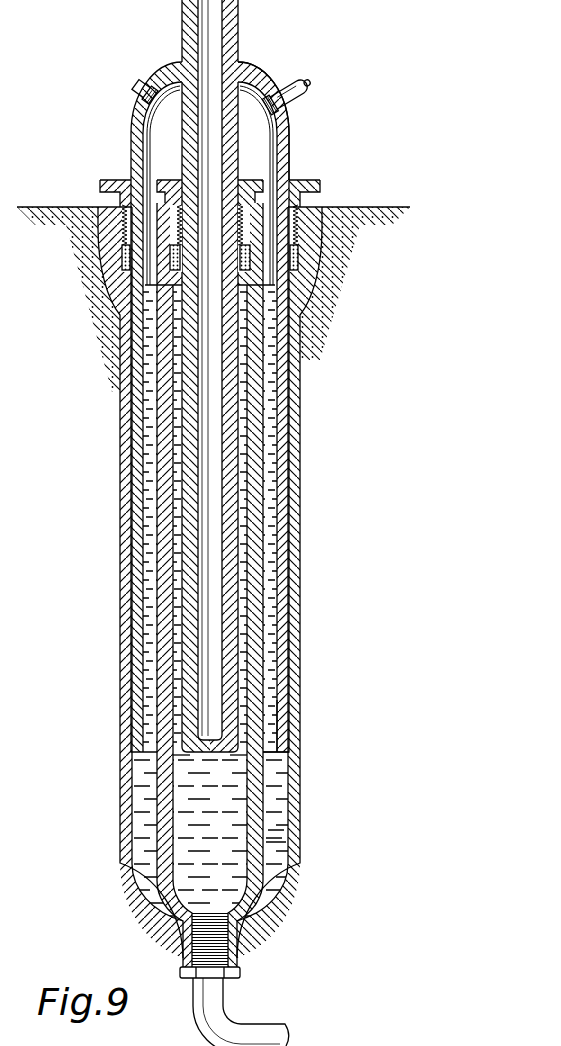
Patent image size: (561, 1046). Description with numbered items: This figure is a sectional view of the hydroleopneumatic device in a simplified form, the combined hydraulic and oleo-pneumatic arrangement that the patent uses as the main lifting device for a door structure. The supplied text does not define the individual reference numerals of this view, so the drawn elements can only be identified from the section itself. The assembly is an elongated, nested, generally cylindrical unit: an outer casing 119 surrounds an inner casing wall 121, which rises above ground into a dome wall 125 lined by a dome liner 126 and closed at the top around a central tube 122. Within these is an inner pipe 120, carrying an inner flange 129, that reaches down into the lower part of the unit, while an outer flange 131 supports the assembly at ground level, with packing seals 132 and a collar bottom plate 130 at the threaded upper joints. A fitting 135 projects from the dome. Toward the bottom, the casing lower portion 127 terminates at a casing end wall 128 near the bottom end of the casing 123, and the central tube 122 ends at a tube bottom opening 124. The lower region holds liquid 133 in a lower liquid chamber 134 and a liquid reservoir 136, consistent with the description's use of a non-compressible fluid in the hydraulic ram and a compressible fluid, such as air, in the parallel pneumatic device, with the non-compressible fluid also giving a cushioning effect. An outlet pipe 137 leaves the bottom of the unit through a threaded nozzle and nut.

The outer casing 119 is at (304, 572).
The inner pipe 120 is at (257, 558).
The inner casing wall 121 is at (303, 497).
The central tube 122 is at (238, 29).
The bottom end of casing 123 is at (232, 757).
The tube bottom opening 124 is at (187, 757).
The dome wall 125 is at (291, 152).
The dome liner 126 is at (270, 133).
The casing lower portion 127 is at (288, 716).
The casing end wall 128 is at (270, 753).
The inner flange 129 is at (177, 180).
The collar bottom plate 130 is at (310, 288).
The outer flange 131 is at (110, 180).
The packing seal 132 is at (124, 256).
The liquid 133 is at (282, 842).
The lower liquid chamber 134 is at (278, 880).
The fitting 135 is at (138, 84).
The liquid reservoir 136 is at (175, 860).
The outlet pipe 137 is at (213, 990).